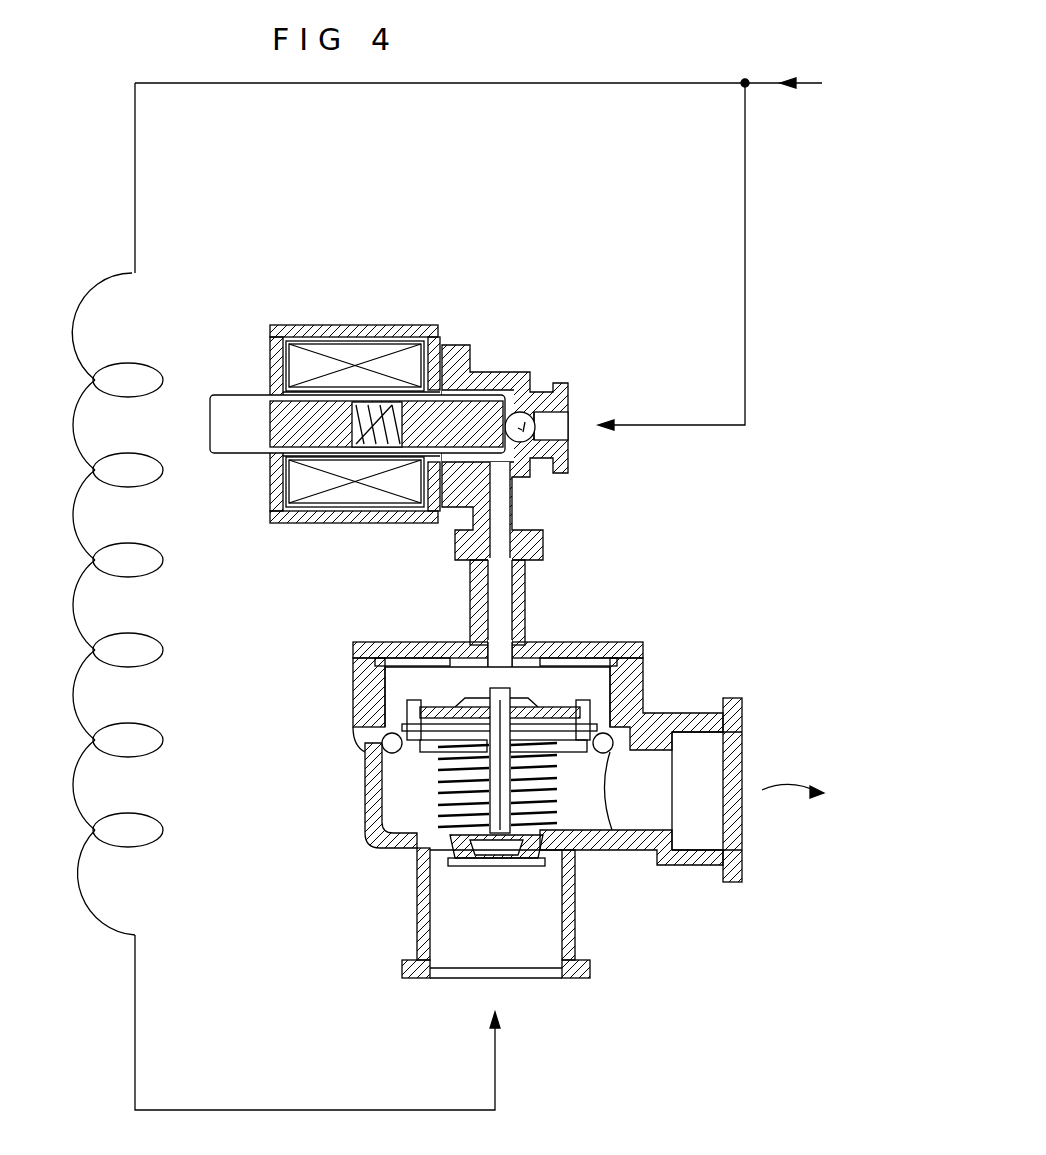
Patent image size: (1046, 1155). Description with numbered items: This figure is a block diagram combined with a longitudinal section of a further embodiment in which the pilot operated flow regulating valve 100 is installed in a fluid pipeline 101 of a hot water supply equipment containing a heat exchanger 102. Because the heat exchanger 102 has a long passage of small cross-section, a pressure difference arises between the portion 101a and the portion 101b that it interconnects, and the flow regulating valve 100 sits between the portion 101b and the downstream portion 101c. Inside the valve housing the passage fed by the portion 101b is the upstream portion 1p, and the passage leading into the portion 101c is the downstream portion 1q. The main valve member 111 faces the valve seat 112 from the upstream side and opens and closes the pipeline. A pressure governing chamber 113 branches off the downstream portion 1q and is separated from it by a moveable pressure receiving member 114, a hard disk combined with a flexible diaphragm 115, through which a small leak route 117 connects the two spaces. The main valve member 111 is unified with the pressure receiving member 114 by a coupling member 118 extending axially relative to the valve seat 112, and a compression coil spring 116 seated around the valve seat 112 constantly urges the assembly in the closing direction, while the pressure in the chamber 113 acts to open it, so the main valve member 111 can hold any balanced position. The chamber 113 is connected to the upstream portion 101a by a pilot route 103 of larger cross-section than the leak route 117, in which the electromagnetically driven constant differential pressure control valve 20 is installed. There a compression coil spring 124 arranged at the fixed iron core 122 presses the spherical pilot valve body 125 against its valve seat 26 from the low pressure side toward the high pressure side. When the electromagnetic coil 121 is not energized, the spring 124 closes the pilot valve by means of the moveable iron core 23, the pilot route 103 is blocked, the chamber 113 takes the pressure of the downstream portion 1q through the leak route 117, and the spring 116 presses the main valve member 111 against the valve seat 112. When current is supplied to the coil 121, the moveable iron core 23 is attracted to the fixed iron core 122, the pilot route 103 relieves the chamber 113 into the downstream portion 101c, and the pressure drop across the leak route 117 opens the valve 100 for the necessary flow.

The fluid pipeline 101 is at (815, 85).
The upstream pipeline portion 101a is at (468, 85).
The pipeline portion 101b is at (285, 1108).
The downstream pipeline portion 101c is at (829, 762).
The heat exchanger 102 is at (158, 668).
The constant differential pressure control valve 20 is at (288, 306).
The electromagnetic coil 121 is at (345, 355).
The fixed iron core 122 is at (285, 430).
The compression coil spring 124 is at (352, 455).
The moveable iron core 23 is at (492, 405).
The spherical pilot valve body 125 is at (530, 416).
The valve seat 26 is at (534, 443).
The pilot route 103 is at (527, 597).
The pilot operated flow regulating valve 100 is at (330, 640).
The pressure governing chamber 113 is at (562, 682).
The leak route 117 is at (592, 705).
The flexible diaphragm 115 is at (372, 760).
The pressure receiving member 114 is at (420, 772).
The valve seat 112 is at (535, 841).
The compression coil spring 116 is at (447, 808).
The main valve member 111 is at (520, 867).
The coupling member 118 is at (497, 822).
The upstream portion 1p is at (545, 938).
The downstream portion 1q is at (690, 830).